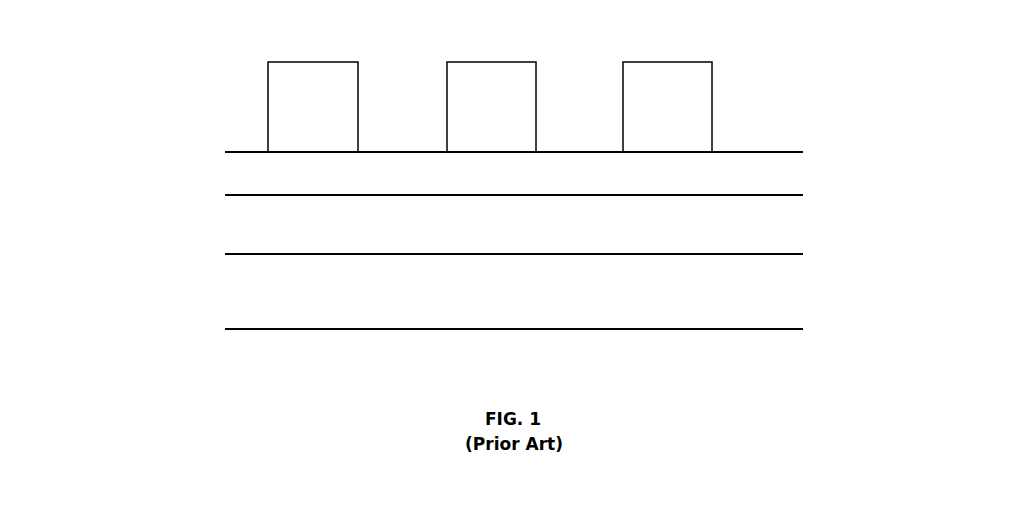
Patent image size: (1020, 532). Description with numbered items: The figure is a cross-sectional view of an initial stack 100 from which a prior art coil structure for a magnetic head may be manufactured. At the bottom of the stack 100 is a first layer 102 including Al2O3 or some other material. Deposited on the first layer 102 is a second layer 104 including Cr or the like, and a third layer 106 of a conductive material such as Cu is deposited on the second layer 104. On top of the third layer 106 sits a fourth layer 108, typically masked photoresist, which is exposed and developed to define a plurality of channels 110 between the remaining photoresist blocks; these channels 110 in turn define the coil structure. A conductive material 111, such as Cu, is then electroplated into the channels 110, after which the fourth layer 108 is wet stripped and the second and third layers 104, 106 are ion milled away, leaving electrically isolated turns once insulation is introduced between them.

The initial stack 100 is at (464, 274).
The first layer 102 is at (237, 301).
The second layer 104 is at (222, 226).
The third layer 106 is at (222, 168).
The fourth layer 108 is at (266, 91).
The channels 110 is at (581, 60).
The conductive material 111 is at (577, 97).